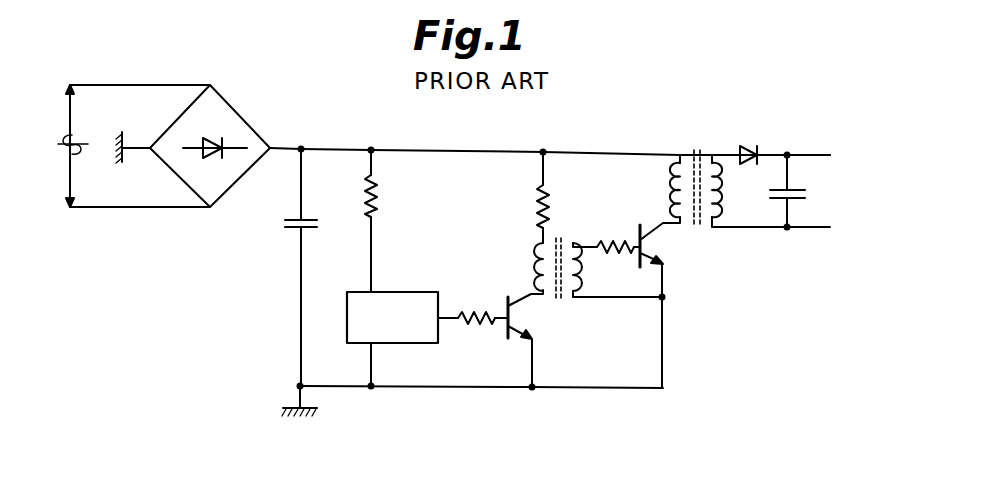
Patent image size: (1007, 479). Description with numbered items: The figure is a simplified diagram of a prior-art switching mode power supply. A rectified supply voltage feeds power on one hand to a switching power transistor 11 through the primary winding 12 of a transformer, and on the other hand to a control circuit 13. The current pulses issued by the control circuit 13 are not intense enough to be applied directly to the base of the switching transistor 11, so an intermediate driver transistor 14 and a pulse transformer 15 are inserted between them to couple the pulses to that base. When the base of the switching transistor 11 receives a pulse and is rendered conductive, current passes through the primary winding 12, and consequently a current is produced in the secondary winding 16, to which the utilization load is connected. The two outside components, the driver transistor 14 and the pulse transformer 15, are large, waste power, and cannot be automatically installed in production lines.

The switching power transistor 11 is at (645, 250).
The primary winding 12 is at (690, 152).
The control circuit 13 is at (420, 286).
The driver transistor 14 is at (517, 318).
The pulse transformer 15 is at (578, 241).
The secondary winding 16 is at (727, 138).